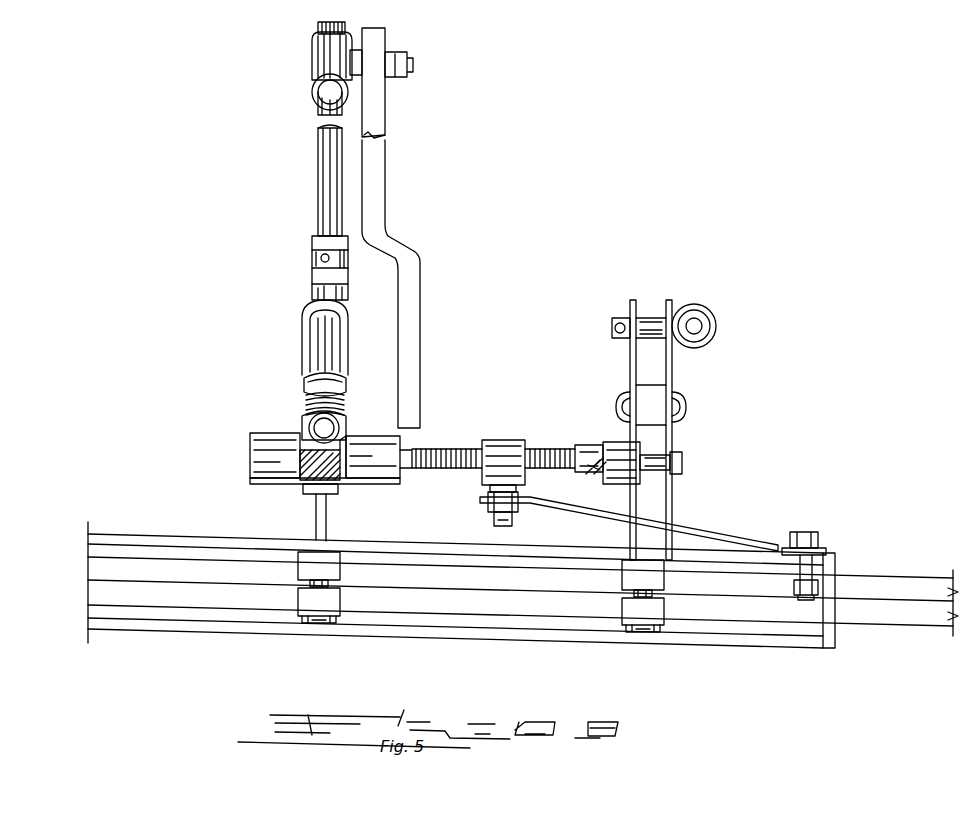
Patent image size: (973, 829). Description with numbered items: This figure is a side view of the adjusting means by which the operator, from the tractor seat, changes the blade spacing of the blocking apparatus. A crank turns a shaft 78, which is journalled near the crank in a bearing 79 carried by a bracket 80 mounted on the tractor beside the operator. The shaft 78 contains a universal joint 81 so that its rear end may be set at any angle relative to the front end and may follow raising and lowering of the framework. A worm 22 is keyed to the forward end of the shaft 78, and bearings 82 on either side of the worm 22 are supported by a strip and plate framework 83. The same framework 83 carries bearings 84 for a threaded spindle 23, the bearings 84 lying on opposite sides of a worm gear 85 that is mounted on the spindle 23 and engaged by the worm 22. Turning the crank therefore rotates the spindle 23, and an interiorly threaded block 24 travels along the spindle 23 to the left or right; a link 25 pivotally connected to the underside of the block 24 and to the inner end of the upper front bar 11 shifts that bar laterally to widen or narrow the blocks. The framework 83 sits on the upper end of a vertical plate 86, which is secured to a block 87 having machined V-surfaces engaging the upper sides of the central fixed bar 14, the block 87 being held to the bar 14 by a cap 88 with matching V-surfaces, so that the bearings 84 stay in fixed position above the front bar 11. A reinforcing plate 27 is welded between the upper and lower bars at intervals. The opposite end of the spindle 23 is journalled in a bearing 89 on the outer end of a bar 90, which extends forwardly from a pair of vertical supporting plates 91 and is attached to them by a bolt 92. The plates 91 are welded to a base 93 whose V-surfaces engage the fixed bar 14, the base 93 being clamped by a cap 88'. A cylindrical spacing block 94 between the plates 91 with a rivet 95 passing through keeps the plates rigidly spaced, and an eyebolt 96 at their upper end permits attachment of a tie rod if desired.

The upper front bar 11 is at (142, 536).
The fixed bar 14 is at (88, 578).
The worm 22 is at (308, 402).
The threaded spindle 23 is at (584, 450).
The interiorly threaded block 24 is at (514, 446).
The link 25 is at (696, 526).
The reinforcing plate 27 is at (830, 578).
The shaft 78 is at (326, 98).
The bearing 79 is at (315, 50).
The bracket 80 is at (385, 120).
The universal joint 81 is at (322, 268).
The bearings 82 is at (312, 380).
The strip and plate framework 83 is at (342, 352).
The bearings 84 is at (262, 454).
The worm gear 85 is at (335, 494).
The vertical plate 86 is at (316, 512).
The block 87 is at (335, 568).
The cap 88 is at (343, 605).
The cap 88' is at (663, 613).
The bearing 89 is at (612, 450).
The bar 90 is at (592, 472).
The vertical supporting plates 91 is at (630, 358).
The bolt 92 is at (684, 466).
The base 93 is at (652, 583).
The cylindrical spacing block 94 is at (648, 396).
The rivet 95 is at (686, 406).
The eyebolt 96 is at (716, 328).